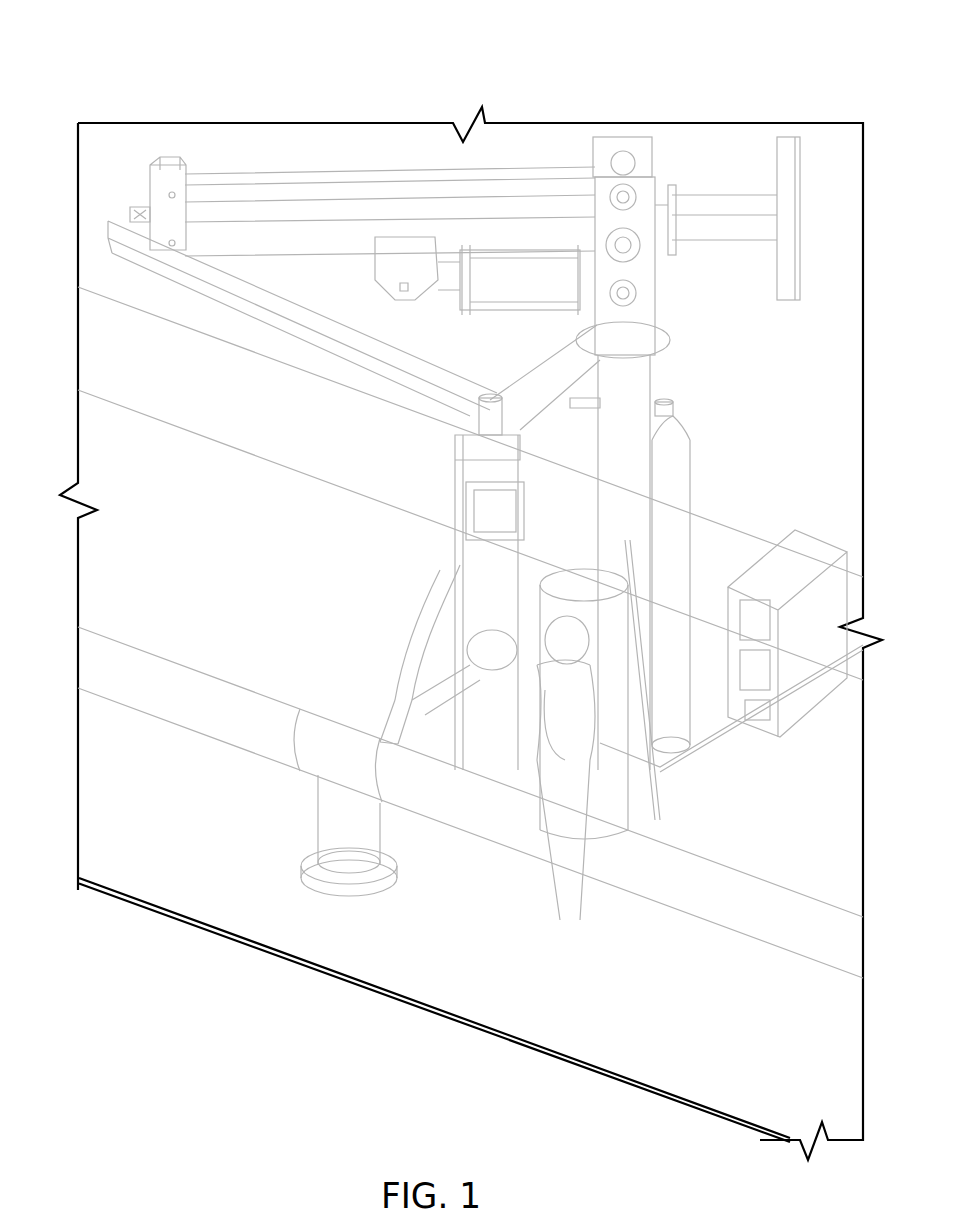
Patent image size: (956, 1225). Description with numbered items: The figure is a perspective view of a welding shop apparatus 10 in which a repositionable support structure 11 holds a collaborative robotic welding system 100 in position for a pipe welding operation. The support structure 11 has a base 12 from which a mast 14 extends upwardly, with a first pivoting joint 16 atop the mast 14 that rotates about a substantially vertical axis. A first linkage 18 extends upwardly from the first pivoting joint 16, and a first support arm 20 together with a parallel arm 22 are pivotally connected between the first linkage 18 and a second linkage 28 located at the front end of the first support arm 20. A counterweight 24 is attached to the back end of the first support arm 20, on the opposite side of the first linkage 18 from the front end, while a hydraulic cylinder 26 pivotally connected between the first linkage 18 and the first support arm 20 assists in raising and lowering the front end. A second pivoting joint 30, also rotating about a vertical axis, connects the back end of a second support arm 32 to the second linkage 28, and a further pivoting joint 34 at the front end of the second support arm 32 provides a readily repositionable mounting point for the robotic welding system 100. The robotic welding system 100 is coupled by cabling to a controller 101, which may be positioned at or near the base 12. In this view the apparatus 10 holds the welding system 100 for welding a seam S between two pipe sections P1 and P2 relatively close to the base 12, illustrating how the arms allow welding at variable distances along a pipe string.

The welding apparatus 10 is at (136, 42).
The repositionable support structure 11 is at (806, 130).
The base 12 is at (677, 735).
The mast 14 is at (632, 481).
The first pivoting joint 16 is at (665, 332).
The first linkage 18 is at (670, 144).
The first support arm 20 is at (475, 207).
The parallel arm 22 is at (327, 173).
The counterweight 24 is at (784, 148).
The hydraulic cylinder 26 is at (538, 280).
The second linkage 28 is at (128, 181).
The second pivoting joint 30 is at (133, 212).
The second support arm 32 is at (142, 253).
The rotary joint 34 is at (489, 392).
The robotic welding system 100 is at (418, 479).
The controller 101 is at (535, 372).
The pipe section P1 is at (431, 797).
The pipe section P2 is at (338, 740).
The seam S is at (380, 752).